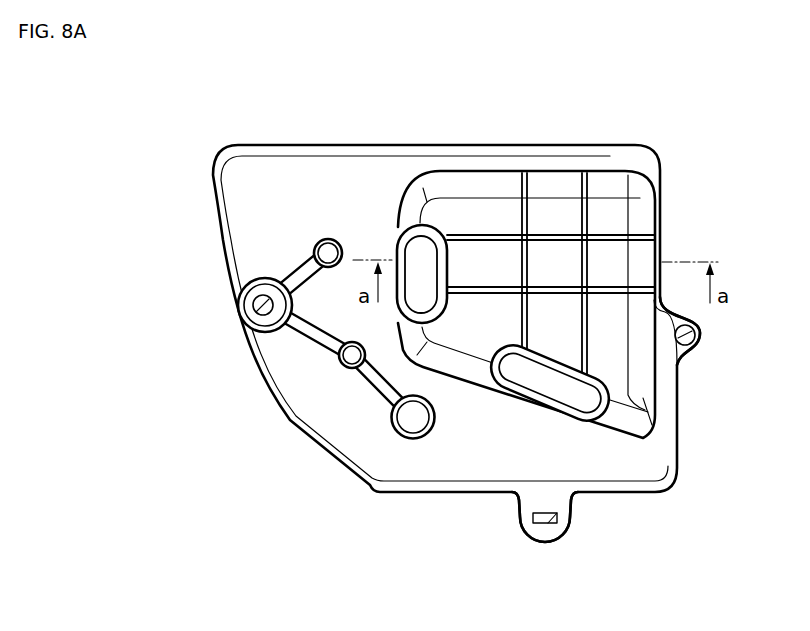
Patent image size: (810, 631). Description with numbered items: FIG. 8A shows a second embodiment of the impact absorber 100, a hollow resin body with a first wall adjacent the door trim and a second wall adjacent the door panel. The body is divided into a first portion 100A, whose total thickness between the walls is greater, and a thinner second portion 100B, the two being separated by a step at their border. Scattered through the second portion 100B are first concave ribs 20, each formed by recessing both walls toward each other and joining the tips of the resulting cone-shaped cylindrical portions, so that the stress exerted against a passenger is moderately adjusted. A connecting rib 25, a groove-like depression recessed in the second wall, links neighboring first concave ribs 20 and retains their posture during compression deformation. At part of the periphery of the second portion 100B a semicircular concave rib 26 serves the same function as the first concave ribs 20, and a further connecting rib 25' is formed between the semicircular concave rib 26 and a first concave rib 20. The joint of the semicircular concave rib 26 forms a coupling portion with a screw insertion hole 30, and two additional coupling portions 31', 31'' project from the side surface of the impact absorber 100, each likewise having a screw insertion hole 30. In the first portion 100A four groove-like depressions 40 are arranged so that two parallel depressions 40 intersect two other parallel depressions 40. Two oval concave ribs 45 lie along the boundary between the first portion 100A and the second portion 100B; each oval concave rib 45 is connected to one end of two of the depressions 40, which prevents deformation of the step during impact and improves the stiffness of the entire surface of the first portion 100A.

The impact absorber 100 is at (189, 135).
The first portion 100A is at (483, 193).
The second portion 100B is at (257, 215).
The first concave rib 20 is at (327, 240).
The connecting rib 25 is at (340, 423).
The connecting rib 25' is at (249, 325).
The semicircular concave rib 26 is at (247, 317).
The screw insertion hole 30 is at (250, 302).
The portion for coupling the impact absorber 31' is at (559, 553).
The portion for coupling the impact absorber 31'' is at (726, 339).
The groove-like depression 40 is at (530, 207).
The oval concave rib 45 is at (411, 252).